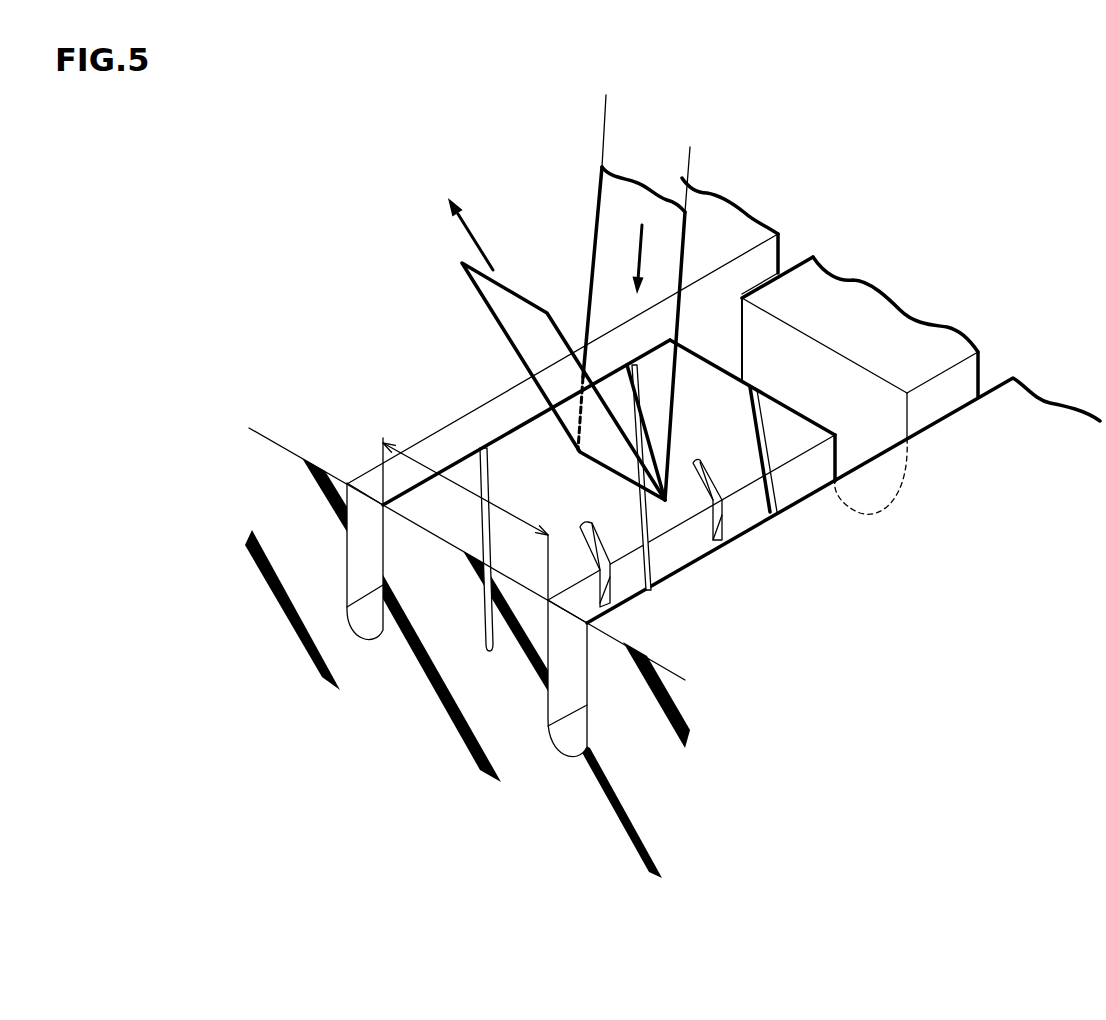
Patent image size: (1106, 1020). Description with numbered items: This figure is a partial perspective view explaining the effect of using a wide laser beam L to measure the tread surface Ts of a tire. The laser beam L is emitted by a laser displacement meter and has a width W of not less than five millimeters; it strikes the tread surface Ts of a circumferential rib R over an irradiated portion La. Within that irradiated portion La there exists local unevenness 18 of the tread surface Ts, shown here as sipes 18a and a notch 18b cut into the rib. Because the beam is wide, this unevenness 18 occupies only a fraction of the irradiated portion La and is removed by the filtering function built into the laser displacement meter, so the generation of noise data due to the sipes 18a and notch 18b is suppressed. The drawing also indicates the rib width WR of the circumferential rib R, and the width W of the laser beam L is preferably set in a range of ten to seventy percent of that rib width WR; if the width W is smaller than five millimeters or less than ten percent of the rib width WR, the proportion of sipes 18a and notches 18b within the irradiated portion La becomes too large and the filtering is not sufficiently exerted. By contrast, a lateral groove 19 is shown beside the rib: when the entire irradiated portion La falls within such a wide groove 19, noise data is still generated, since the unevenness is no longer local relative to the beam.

The unevenness 18 is at (637, 490).
The sipes 18a is at (650, 513).
The notch 18b is at (610, 578).
The lateral groove 19 is at (853, 407).
The laser beam L is at (597, 208).
The irradiated portion La is at (605, 468).
The width of the laser beam W is at (690, 147).
The rib width WR is at (455, 480).
The circumferential rib R is at (720, 393).
The tread surface Ts is at (730, 452).